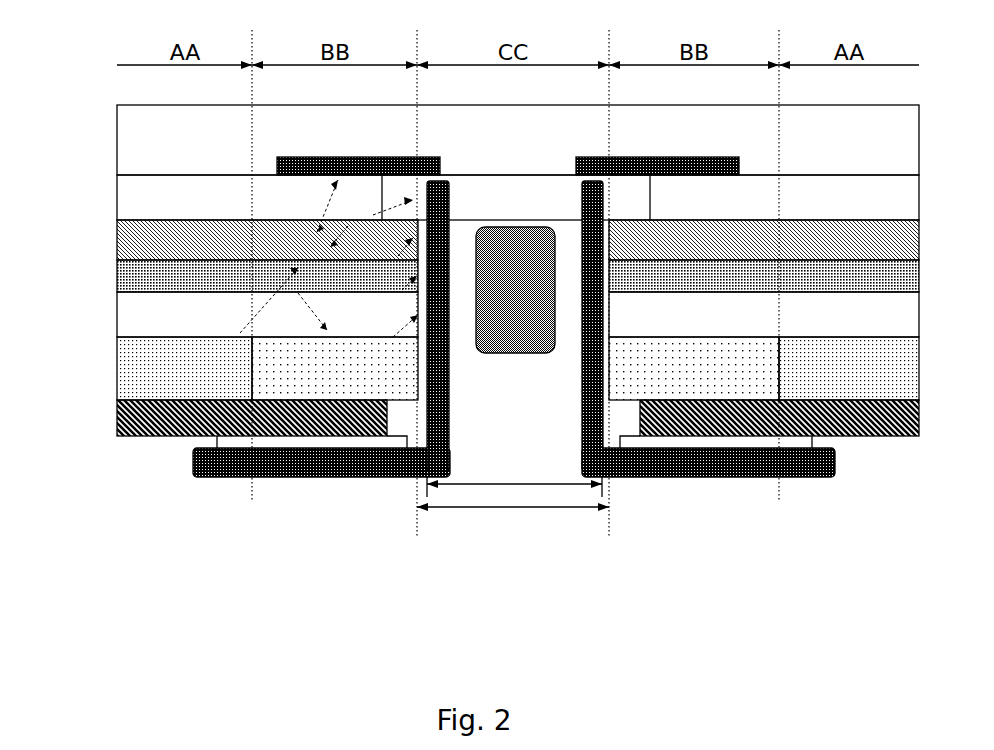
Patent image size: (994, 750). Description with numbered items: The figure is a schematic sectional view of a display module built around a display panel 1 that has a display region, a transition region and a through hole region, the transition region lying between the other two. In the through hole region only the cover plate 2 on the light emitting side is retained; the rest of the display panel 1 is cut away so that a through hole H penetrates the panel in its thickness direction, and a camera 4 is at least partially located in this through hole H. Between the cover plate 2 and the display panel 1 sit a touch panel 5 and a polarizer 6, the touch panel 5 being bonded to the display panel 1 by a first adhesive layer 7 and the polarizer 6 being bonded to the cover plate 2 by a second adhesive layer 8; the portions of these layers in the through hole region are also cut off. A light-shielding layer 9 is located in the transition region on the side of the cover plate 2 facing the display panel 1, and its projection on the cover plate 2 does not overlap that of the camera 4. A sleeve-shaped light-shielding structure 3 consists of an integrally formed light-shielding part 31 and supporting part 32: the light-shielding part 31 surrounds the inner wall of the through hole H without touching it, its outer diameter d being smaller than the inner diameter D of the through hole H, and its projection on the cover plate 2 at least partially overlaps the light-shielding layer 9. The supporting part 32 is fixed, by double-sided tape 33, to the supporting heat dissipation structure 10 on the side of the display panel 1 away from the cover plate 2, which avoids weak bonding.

The display panel 1 is at (116, 369).
The cover plate 2 is at (116, 140).
The light-shielding structure 3 is at (514, 418).
The light-shielding part 31 is at (450, 347).
The supporting part 32 is at (315, 477).
The double-sided tape 33 is at (228, 443).
The camera 4 is at (503, 353).
The touch panel 5 is at (116, 277).
The polarizer 6 is at (116, 238).
The first adhesive layer 7 is at (116, 315).
The second adhesive layer 8 is at (116, 198).
The light-shielding layer 9 is at (350, 157).
The supporting heat dissipation structure 10 is at (116, 417).
The through hole H is at (542, 388).
The outer diameter of light-shielding part d is at (514, 475).
The inner diameter of through hole D is at (513, 519).